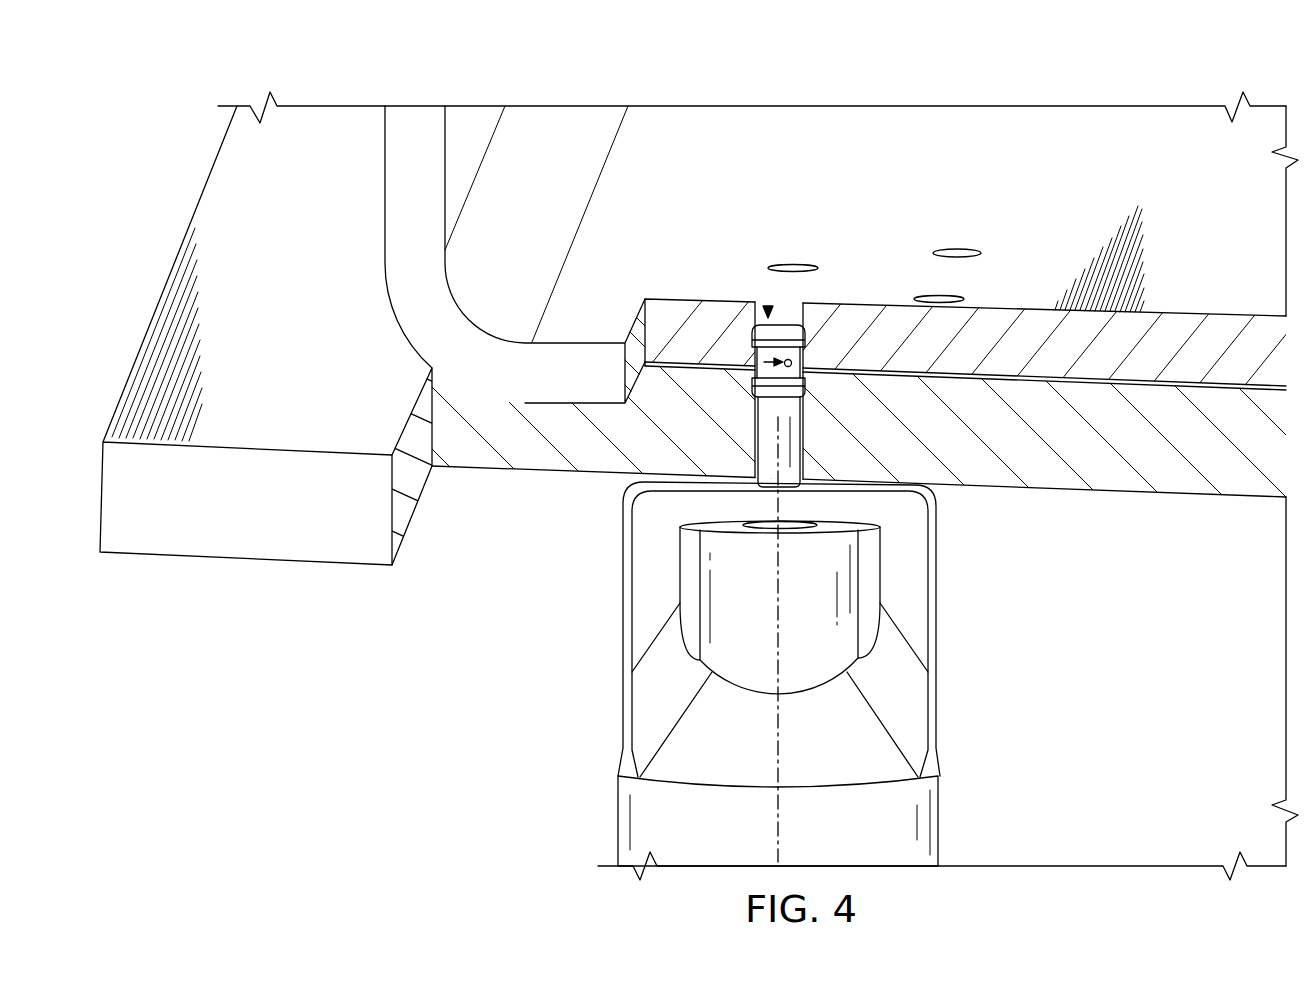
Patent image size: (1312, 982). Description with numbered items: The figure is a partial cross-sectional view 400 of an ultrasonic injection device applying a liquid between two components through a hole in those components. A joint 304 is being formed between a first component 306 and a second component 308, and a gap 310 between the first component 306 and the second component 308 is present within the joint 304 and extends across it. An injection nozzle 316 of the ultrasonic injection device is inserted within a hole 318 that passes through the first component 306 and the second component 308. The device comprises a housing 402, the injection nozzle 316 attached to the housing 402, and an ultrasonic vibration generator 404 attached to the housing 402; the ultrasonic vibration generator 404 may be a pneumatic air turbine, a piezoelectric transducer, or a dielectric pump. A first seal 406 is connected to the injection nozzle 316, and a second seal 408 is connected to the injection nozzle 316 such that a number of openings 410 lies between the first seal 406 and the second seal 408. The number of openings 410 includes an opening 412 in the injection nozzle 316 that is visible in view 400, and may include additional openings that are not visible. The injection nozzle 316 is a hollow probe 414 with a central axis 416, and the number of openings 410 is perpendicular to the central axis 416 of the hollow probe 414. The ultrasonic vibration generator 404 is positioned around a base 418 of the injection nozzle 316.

The view 400 is at (605, 62).
The joint 304 is at (1047, 373).
The first component 306 is at (385, 180).
The second component 308 is at (1098, 484).
The gap 310 is at (933, 373).
The injection nozzle 316 is at (768, 307).
The hole 318 is at (778, 302).
The housing 402 is at (620, 808).
The ultrasonic vibration generator 404 is at (625, 633).
The first seal 406 is at (788, 318).
The second seal 408 is at (752, 383).
The number of openings 410 is at (699, 544).
The opening 412 is at (808, 357).
The hollow probe 414 is at (758, 435).
The central axis 416 is at (780, 607).
The base 418 is at (790, 528).